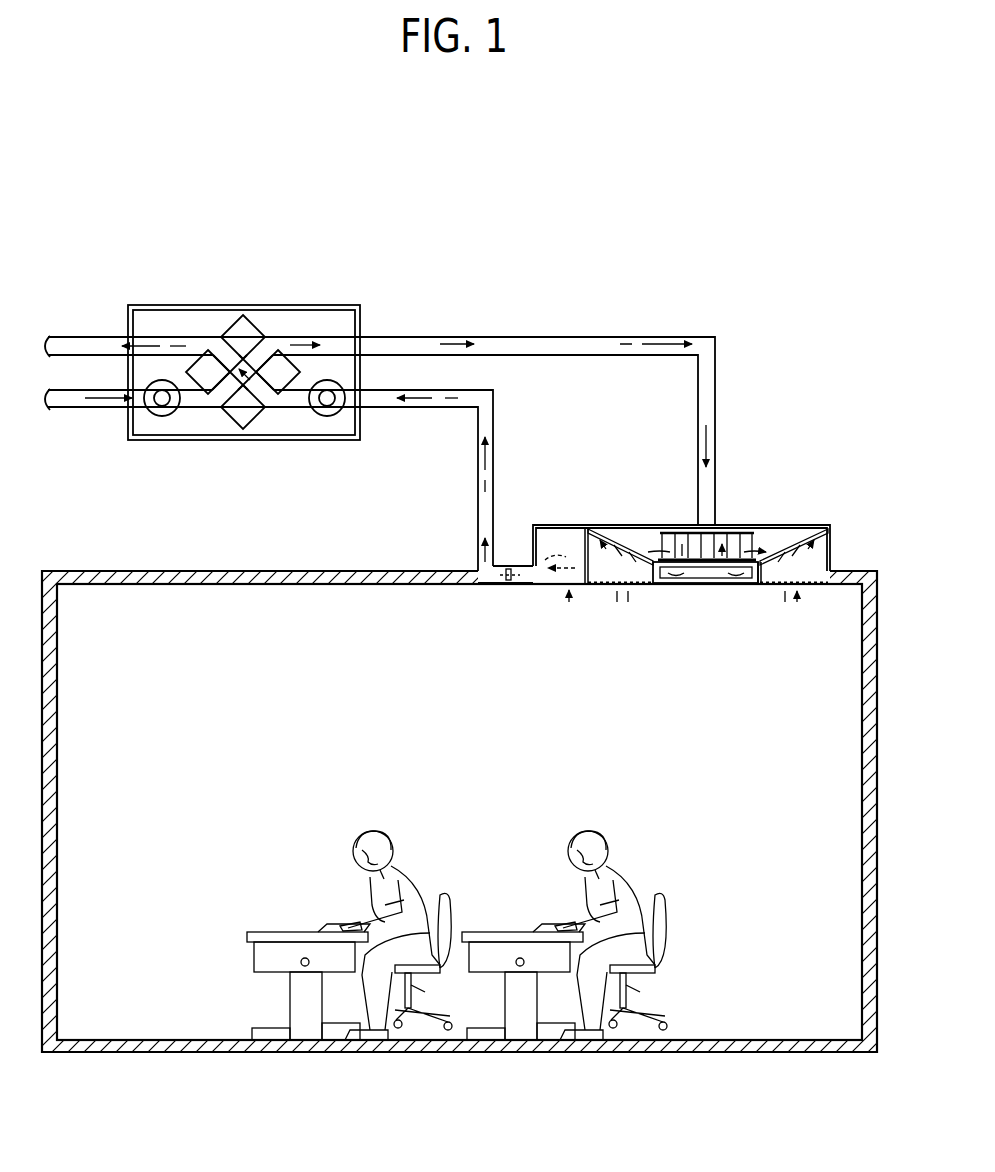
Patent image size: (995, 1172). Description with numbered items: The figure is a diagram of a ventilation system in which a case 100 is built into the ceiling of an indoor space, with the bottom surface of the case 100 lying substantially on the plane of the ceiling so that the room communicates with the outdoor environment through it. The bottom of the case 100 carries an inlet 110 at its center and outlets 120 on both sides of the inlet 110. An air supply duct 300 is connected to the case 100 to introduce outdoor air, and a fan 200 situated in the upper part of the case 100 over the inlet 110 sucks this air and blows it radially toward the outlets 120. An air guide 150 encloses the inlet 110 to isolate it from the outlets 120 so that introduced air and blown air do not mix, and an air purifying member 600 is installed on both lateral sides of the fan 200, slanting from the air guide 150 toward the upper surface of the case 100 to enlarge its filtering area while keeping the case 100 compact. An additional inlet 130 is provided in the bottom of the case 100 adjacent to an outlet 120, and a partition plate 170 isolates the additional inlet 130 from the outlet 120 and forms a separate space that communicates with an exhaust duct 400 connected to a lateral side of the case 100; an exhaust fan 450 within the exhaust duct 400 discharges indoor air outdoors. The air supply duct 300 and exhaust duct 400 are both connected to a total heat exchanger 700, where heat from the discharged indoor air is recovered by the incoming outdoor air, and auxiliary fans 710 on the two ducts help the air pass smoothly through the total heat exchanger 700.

The case 100 is at (814, 512).
The inlet 110 is at (658, 597).
The outlet 120 is at (652, 595).
The additional inlet 130 is at (580, 594).
The air guide 150 is at (760, 584).
The partition plate 170 is at (570, 540).
The fan 200 is at (736, 548).
The air supply duct 300 is at (724, 439).
The exhaust duct 400 is at (466, 527).
The exhaust fan 450 is at (504, 581).
The air purifying member 600 is at (636, 540).
The total heat exchanger 700 is at (236, 448).
The auxiliary fan 710 is at (162, 416).